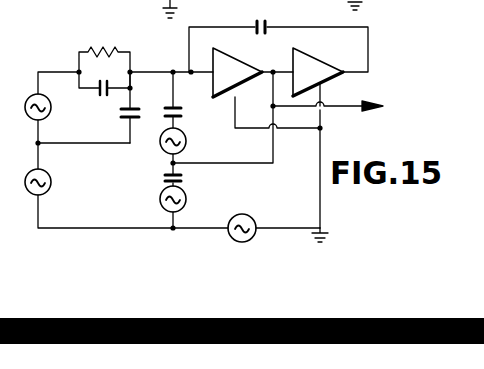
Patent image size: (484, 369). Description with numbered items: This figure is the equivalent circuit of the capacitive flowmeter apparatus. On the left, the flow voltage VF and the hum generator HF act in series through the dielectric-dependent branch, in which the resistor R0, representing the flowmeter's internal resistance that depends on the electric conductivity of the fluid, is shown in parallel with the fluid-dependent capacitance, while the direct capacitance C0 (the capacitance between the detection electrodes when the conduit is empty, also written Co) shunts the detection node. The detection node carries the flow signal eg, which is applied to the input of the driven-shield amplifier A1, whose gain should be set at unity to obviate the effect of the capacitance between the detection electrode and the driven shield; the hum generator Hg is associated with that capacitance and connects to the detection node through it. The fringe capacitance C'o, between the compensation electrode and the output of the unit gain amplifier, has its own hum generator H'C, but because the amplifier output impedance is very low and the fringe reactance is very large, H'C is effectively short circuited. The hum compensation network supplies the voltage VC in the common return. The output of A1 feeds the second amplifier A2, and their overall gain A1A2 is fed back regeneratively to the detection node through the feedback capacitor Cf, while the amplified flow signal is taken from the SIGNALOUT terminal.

The resistor R0 is at (104, 50).
The direct capacitance C0 is at (139, 117).
The direct capacitance Co is at (185, 115).
The feedback capacitor Cf is at (269, 18).
The fringe capacitance C'o is at (187, 182).
The flow voltage VF is at (47, 107).
The hum generator HF is at (50, 182).
The hum generator Hg is at (186, 141).
The hum generator H'C is at (188, 199).
The hum compensation voltage VC is at (250, 223).
The driven-shield amplifier A1 is at (237, 72).
The second amplifier A2 is at (318, 72).
The flow signal eg is at (209, 77).
The signal output SIGNALOUT is at (407, 121).